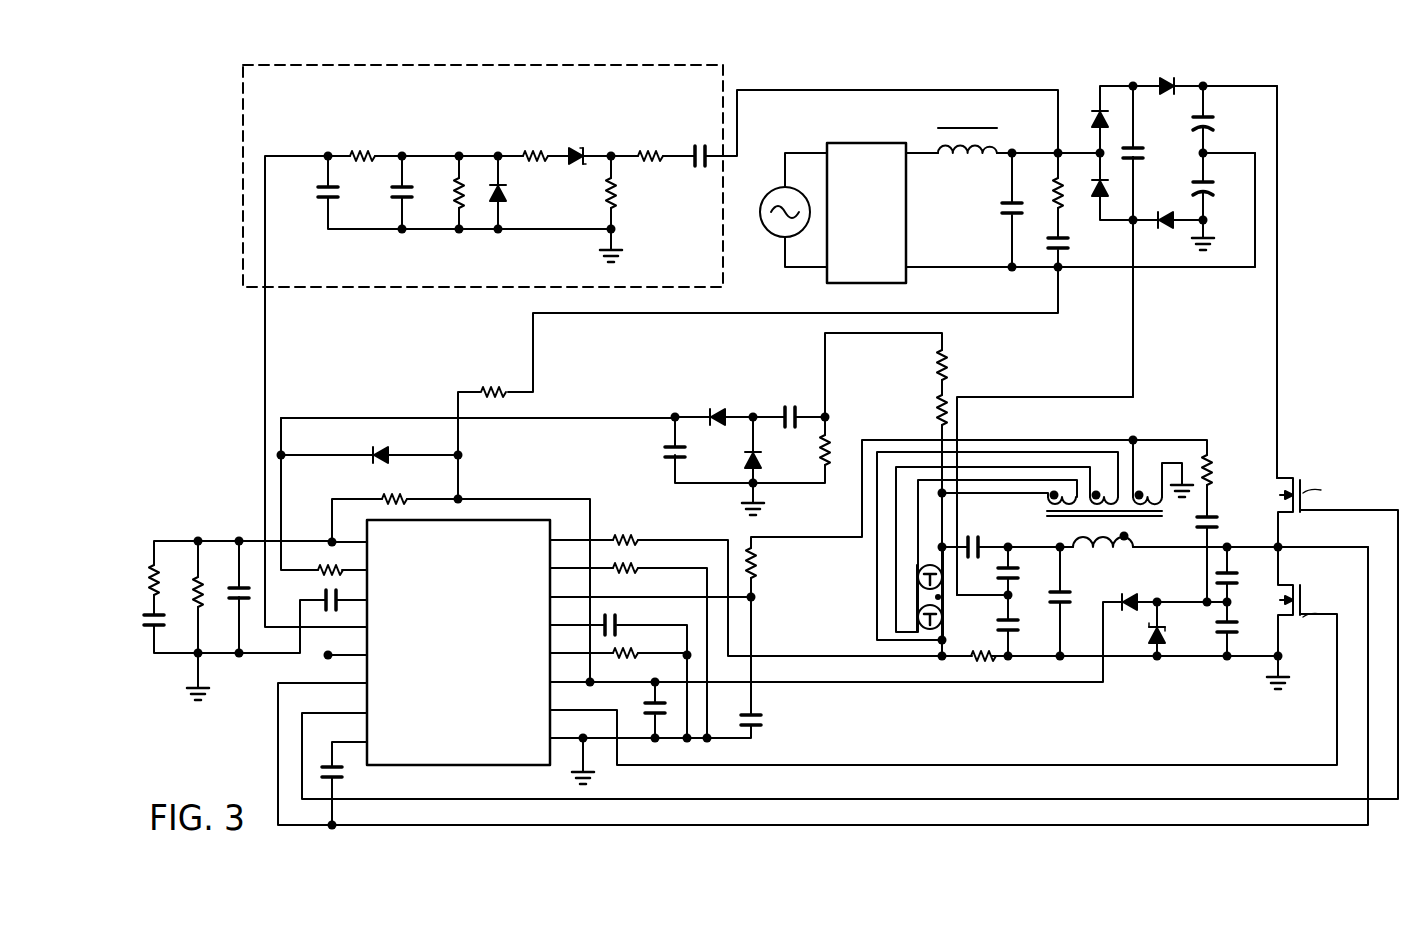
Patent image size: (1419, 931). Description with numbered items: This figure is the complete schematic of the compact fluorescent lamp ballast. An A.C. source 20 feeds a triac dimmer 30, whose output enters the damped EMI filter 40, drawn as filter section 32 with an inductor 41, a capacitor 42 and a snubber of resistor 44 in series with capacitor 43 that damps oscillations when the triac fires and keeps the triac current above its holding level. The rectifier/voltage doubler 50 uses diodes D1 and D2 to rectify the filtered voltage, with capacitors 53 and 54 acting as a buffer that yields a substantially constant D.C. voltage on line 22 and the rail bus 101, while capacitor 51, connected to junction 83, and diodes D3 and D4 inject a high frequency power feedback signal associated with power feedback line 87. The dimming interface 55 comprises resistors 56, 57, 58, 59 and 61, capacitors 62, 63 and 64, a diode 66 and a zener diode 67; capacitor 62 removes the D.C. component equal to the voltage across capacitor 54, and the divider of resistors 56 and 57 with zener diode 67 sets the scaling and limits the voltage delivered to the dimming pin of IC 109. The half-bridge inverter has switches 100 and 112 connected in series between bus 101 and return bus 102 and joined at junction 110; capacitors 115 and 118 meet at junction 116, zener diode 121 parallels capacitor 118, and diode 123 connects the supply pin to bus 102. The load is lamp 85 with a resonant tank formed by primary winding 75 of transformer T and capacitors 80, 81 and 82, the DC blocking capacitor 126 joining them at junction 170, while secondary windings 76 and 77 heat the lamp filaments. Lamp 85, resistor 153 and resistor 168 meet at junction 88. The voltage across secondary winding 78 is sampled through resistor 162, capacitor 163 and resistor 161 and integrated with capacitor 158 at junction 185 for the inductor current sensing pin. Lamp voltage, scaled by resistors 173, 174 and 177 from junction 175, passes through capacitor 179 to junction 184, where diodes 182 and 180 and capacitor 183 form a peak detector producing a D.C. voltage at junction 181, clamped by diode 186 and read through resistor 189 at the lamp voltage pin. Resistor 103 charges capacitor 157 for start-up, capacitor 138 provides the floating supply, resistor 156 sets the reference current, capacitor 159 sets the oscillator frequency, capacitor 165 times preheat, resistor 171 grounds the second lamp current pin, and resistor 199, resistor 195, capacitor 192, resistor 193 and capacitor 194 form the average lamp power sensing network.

The A.C. source 20 is at (772, 191).
The line 22 is at (1233, 269).
The triac dimmer 30 is at (850, 142).
The input filter 32 is at (900, 124).
The damped EMI filter 40 is at (1006, 141).
The inductor 41 is at (960, 128).
The capacitor 42 is at (998, 208).
The capacitor 43 is at (1072, 245).
The resistor 44 is at (1052, 192).
The rectifier/voltage doubler 50 is at (1208, 82).
The capacitor 51 is at (1146, 152).
The capacitor 53 is at (1216, 122).
The capacitor 54 is at (1216, 190).
The dimming interface 55 is at (725, 64).
The resistor 56 is at (650, 150).
The resistor 57 is at (622, 194).
The resistor 58 is at (535, 152).
The resistor 59 is at (455, 196).
The resistor 61 is at (352, 150).
The capacitor 62 is at (700, 143).
The capacitor 63 is at (392, 192).
The capacitor 64 is at (318, 192).
The diode 66 is at (506, 195).
The zener diode 67 is at (578, 168).
The primary winding 75 is at (1110, 541).
The secondary winding 76 is at (1068, 490).
The secondary winding 77 is at (1112, 490).
The secondary winding 78 is at (1155, 490).
The capacitor 80 is at (1072, 596).
The capacitor 81 is at (997, 573).
The capacitor 82 is at (1018, 632).
The junction 83 is at (1011, 595).
The lamp 85 is at (912, 582).
The power feedback line 87 is at (1136, 336).
The junction 88 is at (937, 651).
The switch 100 is at (1282, 476).
The B+ rail bus 101 is at (1281, 268).
The return bus 102 is at (1210, 659).
The resistor 103 is at (490, 386).
The integrated circuit 109 is at (437, 668).
The junction 110 is at (1283, 545).
The switch 112 is at (1297, 619).
The capacitor 115 is at (1237, 580).
The junction 116 is at (1231, 605).
The capacitor 118 is at (1215, 632).
The zener diode 121 is at (1147, 631).
The diode 123 is at (1135, 598).
The DC blocking capacitor 126 is at (972, 536).
The capacitor 138 is at (345, 772).
The resistor 153 is at (982, 650).
The resistor 156 is at (636, 650).
The capacitor 157 is at (645, 708).
The capacitor 158 is at (765, 718).
The capacitor 159 is at (620, 620).
The resistor 161 is at (758, 560).
The resistor 162 is at (1212, 476).
The capacitor 163 is at (1218, 523).
The capacitor 165 is at (316, 595).
The resistor 168 is at (645, 532).
The junction 170 is at (1009, 541).
The resistor 171 is at (635, 565).
The resistor 173 is at (935, 410).
The resistor 174 is at (952, 364).
The junction 175 is at (830, 413).
The resistor 177 is at (830, 465).
The capacitor 179 is at (792, 404).
The diode 180 is at (720, 411).
The junction 181 is at (672, 412).
The diode 182 is at (745, 460).
The capacitor 183 is at (660, 450).
The junction 184 is at (752, 410).
The junction 185 is at (756, 598).
The diode 186 is at (394, 452).
The resistor 189 is at (322, 568).
The capacitor 192 is at (232, 600).
The resistor 193 is at (150, 560).
The capacitor 194 is at (145, 630).
The resistor 195 is at (194, 587).
The resistor 199 is at (380, 495).
The diode D1 is at (1092, 116).
The diode D2 is at (1092, 190).
The diode D3 is at (1162, 79).
The diode D4 is at (1166, 229).
The transformer T is at (1164, 456).